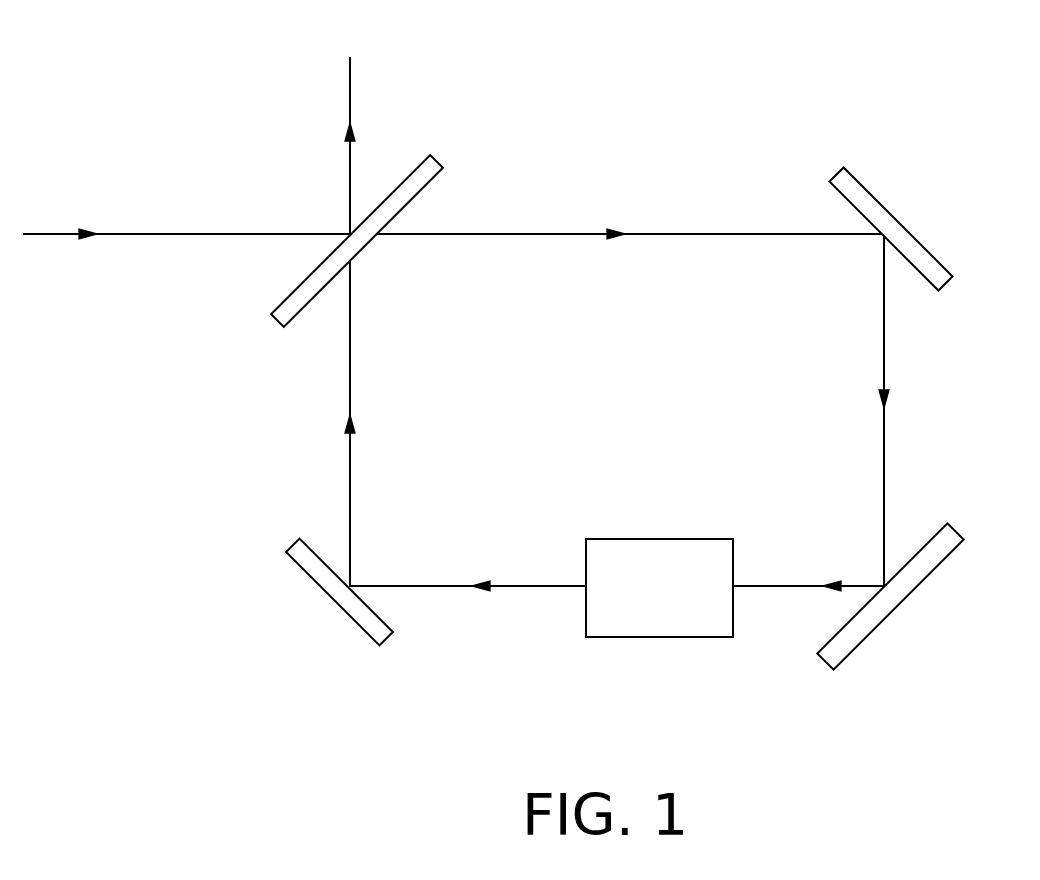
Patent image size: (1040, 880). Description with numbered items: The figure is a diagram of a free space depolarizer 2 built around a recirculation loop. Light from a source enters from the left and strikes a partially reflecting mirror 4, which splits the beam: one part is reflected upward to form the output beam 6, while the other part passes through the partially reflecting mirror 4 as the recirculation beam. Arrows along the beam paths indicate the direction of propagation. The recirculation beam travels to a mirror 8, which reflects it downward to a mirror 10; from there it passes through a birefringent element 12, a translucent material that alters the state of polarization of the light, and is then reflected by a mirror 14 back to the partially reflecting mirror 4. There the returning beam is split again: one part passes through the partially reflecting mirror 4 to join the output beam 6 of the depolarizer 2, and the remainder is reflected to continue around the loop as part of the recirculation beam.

The free space depolarizer 2 is at (667, 153).
The partially reflecting mirror 4 is at (398, 183).
The output beam 6 is at (350, 73).
The mirror 8 is at (918, 238).
The mirror 10 is at (917, 590).
The birefringent element 12 is at (653, 638).
The mirror 14 is at (333, 605).